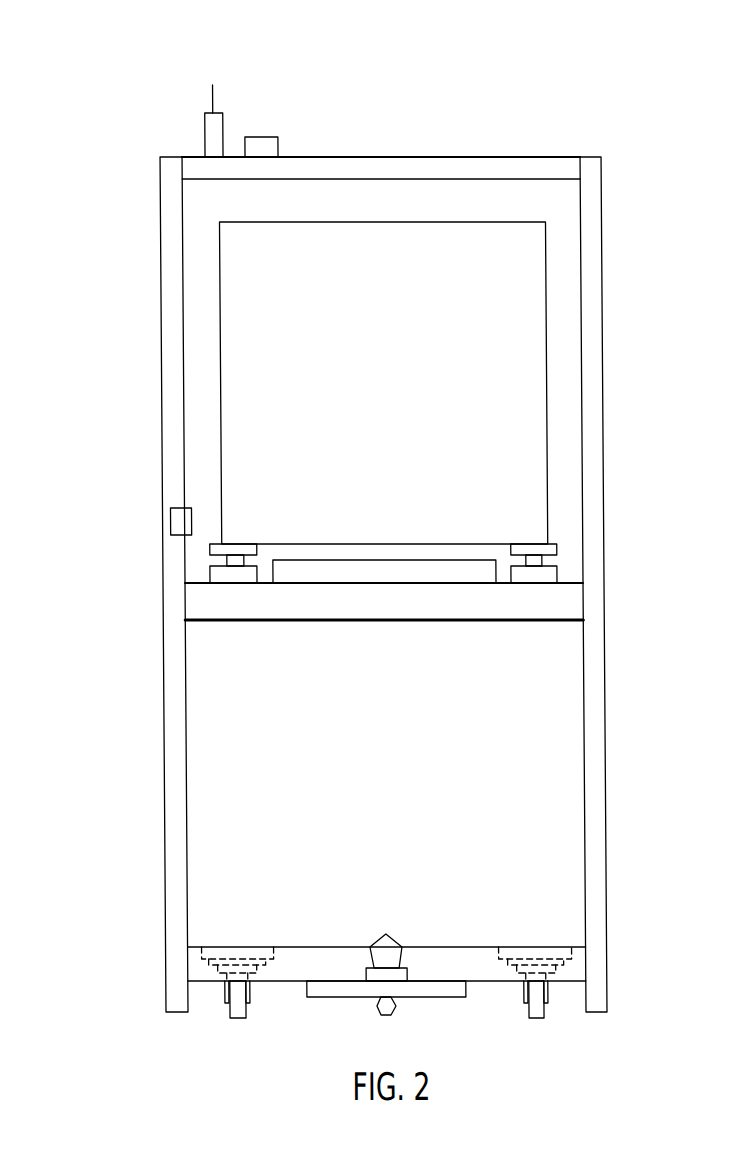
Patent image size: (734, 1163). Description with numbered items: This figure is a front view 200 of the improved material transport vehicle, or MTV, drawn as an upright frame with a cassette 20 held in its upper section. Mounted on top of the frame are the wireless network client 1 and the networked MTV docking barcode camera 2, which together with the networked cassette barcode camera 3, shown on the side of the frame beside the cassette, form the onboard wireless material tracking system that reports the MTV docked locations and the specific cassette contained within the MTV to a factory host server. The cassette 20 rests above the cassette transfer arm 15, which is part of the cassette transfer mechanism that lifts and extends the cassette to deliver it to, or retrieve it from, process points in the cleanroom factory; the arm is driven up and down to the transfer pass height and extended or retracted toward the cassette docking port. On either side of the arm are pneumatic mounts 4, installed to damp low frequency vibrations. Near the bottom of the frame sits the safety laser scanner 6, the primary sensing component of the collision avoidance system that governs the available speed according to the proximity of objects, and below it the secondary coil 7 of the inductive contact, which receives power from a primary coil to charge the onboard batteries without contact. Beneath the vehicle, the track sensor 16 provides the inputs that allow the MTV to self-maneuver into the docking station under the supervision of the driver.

The front view 200 is at (108, 69).
The wireless network client 1 is at (208, 128).
The networked MTV docking barcode camera 2 is at (267, 137).
The cassette 20 is at (394, 398).
The networked cassette barcode camera 3 is at (173, 520).
The pneumatic mounts 4 is at (216, 575).
The cassette transfer arm 15 is at (380, 575).
The safety laser scanner 6 is at (380, 941).
The secondary coil 7 is at (408, 976).
The track sensor 16 is at (394, 1011).